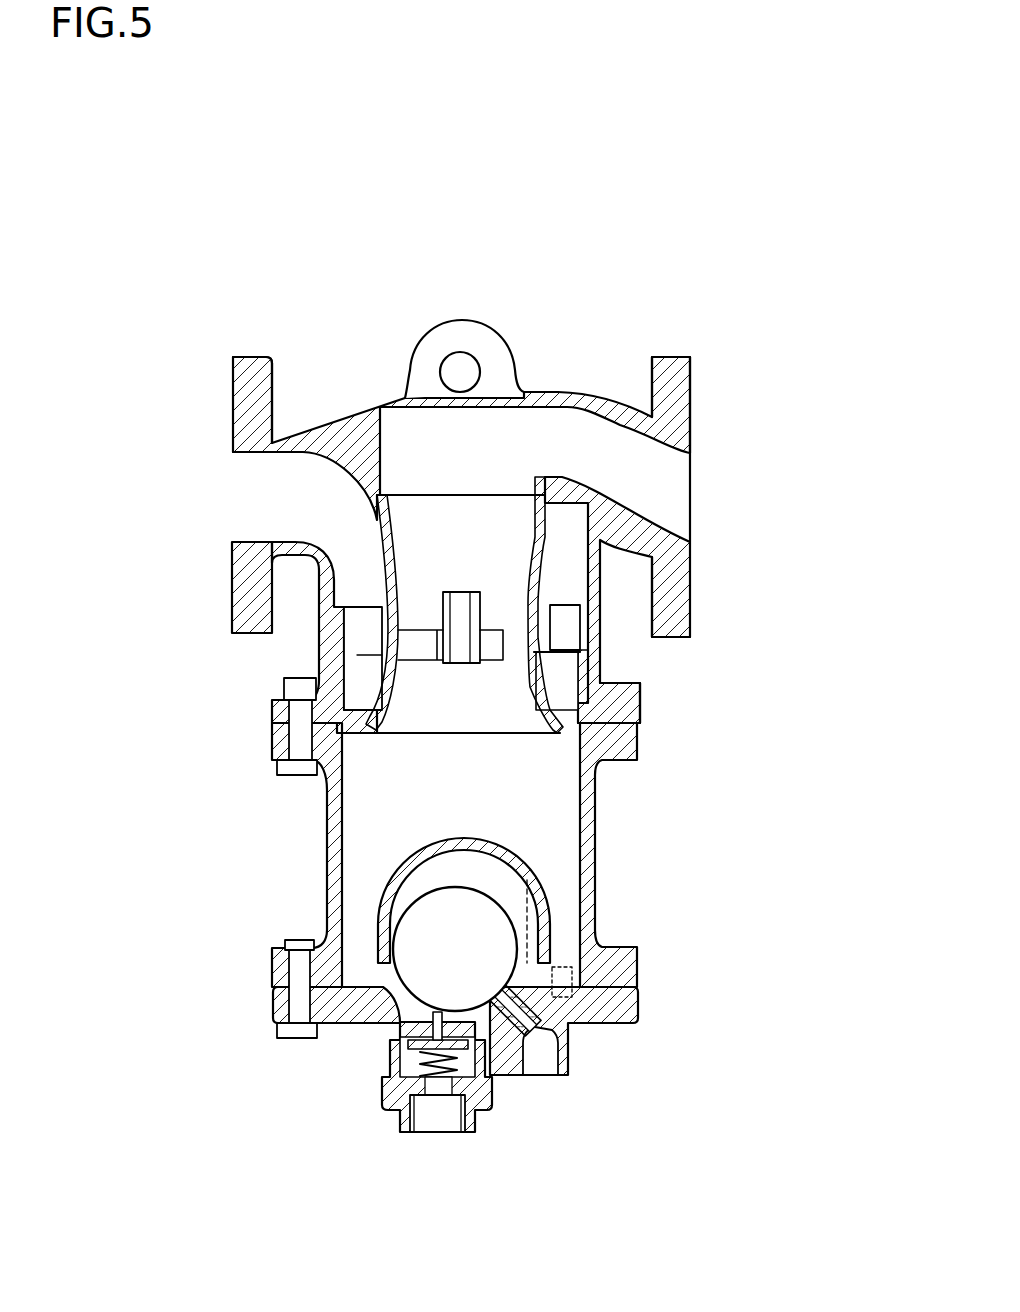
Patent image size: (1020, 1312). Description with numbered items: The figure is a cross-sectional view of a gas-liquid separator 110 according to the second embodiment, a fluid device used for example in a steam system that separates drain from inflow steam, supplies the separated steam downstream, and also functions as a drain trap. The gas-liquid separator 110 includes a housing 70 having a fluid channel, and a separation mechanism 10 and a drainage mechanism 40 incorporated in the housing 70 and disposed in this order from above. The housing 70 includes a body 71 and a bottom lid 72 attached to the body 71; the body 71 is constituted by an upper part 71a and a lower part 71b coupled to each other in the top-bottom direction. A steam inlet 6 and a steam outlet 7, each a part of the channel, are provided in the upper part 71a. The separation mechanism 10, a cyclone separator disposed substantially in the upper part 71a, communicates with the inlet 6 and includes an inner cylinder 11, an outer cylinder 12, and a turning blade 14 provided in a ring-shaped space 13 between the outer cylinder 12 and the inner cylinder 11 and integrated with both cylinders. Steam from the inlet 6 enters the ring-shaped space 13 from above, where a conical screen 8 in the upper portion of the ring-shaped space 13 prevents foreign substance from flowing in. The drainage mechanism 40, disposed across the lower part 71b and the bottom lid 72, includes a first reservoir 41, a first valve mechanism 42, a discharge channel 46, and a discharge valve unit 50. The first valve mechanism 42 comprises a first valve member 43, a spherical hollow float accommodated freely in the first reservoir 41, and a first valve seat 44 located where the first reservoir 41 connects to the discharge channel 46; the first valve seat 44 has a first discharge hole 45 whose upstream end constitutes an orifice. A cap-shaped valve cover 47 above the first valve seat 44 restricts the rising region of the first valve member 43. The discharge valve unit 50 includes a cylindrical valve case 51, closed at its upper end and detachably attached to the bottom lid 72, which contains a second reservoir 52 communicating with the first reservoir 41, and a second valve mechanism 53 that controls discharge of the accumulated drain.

The gas-liquid separator 110 is at (250, 245).
The housing 70 is at (234, 378).
The body 71 is at (700, 672).
The upper part 71a is at (690, 393).
The lower part 71b is at (596, 800).
The screen 8 is at (365, 520).
The inlet 6 is at (260, 498).
The separation mechanism 10 is at (376, 578).
The outlet 7 is at (656, 492).
The inner cylinder 11 is at (606, 546).
The ring-shaped space 13 is at (360, 628).
The turning blade 14 is at (370, 643).
The outer cylinder 12 is at (602, 677).
The valve cover 47 is at (420, 838).
The drainage mechanism 40 is at (360, 880).
The first reservoir 41 is at (560, 862).
The first valve member 43 is at (403, 915).
The first valve mechanism 42 is at (514, 910).
The first valve seat 44 is at (562, 977).
The bottom lid 72 is at (276, 1010).
The first discharge hole 45 is at (582, 1025).
The discharge channel 46 is at (560, 1060).
The discharge valve unit 50 is at (404, 1137).
The valve case 51 is at (482, 1057).
The second reservoir 52 is at (400, 1058).
The second valve mechanism 53 is at (437, 1080).